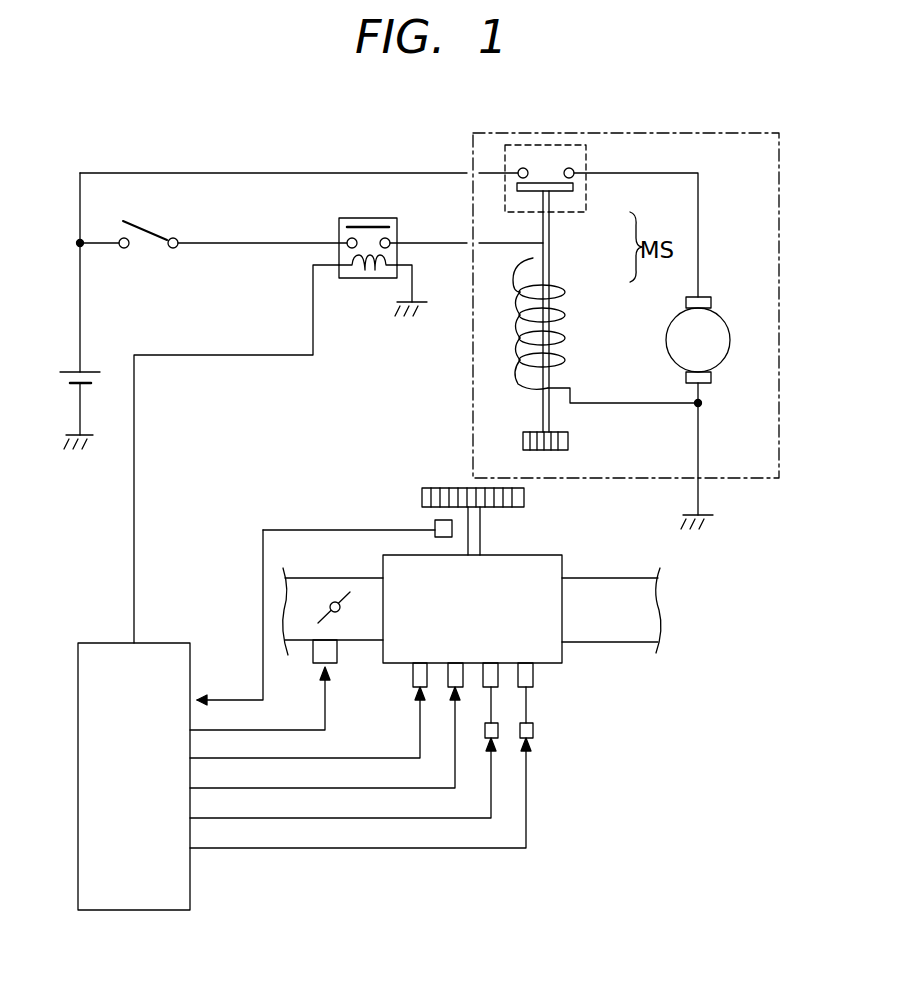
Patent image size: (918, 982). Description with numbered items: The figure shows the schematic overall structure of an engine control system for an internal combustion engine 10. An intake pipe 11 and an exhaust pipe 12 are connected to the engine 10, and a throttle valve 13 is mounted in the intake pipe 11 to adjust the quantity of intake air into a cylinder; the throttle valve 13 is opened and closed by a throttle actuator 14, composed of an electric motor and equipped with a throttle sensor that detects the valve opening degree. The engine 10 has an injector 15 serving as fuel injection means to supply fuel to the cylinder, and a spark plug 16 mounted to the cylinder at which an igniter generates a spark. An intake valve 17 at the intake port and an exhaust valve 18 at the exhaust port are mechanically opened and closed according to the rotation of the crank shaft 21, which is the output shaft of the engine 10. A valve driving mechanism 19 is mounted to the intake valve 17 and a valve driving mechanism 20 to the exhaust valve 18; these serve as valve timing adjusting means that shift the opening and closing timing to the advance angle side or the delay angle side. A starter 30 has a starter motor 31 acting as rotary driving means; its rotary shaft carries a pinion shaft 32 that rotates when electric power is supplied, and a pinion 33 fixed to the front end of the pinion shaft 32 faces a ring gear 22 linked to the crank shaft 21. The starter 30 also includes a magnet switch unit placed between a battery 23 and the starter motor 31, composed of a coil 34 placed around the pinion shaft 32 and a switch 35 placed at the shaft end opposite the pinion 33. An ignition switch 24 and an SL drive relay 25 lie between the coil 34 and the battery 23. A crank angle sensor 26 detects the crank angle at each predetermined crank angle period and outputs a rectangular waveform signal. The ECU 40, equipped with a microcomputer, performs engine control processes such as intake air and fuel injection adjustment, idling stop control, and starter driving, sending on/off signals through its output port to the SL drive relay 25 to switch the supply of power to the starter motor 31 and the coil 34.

The internal combustion engine 10 is at (567, 550).
The intake pipe 11 is at (303, 578).
The exhaust pipe 12 is at (622, 578).
The throttle valve 13 is at (347, 590).
The throttle actuator 14 is at (313, 655).
The injector 15 is at (413, 680).
The spark plug 16 is at (448, 680).
The intake valve 17 is at (483, 680).
The exhaust valve 18 is at (533, 680).
The valve driving mechanism 19 is at (498, 730).
The valve driving mechanism 20 is at (533, 730).
The crank shaft 21 is at (481, 530).
The ring gear 22 is at (432, 488).
The battery 23 is at (70, 370).
The ignition switch 24 is at (150, 230).
The SL drive relay 25 is at (397, 228).
The crank angle sensor 26 is at (437, 522).
The starter 30 is at (733, 133).
The starter motor 31 is at (728, 313).
The pinion shaft 32 is at (555, 377).
The pinion 33 is at (568, 440).
The coil 34 is at (553, 285).
The switch 35 is at (560, 212).
The ECU 40 is at (128, 910).